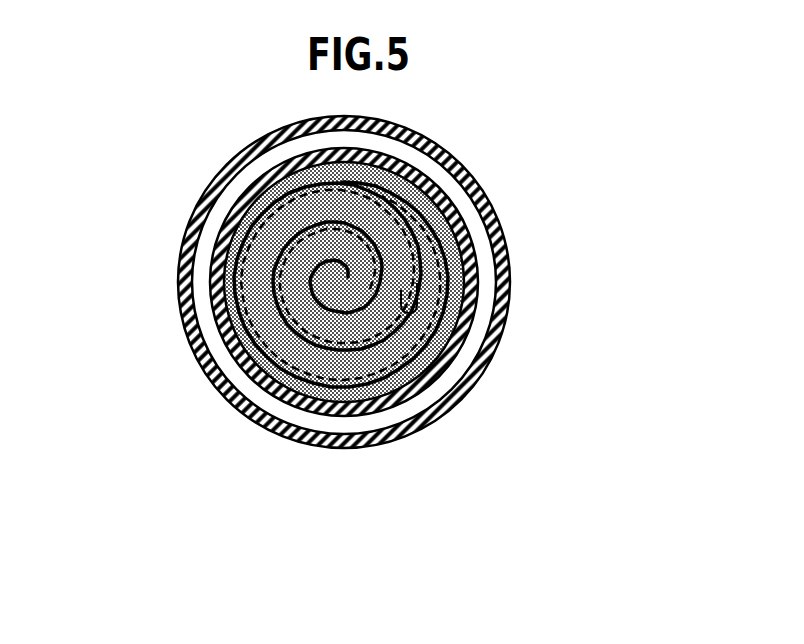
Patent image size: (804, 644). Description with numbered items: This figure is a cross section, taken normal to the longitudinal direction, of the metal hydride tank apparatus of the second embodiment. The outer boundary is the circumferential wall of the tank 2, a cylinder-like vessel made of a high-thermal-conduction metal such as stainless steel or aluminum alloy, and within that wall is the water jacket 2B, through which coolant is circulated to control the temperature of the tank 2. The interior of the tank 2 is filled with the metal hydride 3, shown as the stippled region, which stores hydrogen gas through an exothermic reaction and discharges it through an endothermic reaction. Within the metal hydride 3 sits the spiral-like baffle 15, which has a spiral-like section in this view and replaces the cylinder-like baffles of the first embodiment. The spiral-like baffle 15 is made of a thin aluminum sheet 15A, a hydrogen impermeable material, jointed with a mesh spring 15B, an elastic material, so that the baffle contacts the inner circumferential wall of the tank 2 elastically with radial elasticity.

The tank 2 is at (281, 253).
The water jacket 2B is at (190, 345).
The metal hydride 3 is at (283, 247).
The spiral-like baffle 15 is at (464, 284).
The thin aluminum sheet 15A is at (420, 255).
The mesh spring 15B is at (400, 292).